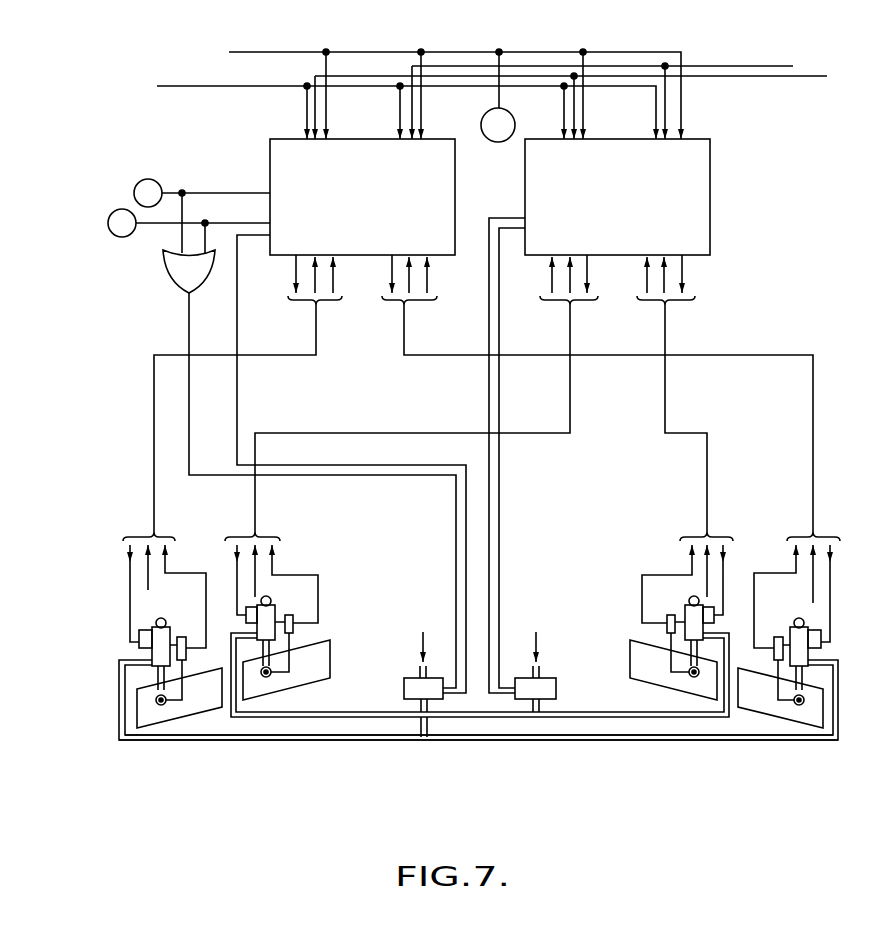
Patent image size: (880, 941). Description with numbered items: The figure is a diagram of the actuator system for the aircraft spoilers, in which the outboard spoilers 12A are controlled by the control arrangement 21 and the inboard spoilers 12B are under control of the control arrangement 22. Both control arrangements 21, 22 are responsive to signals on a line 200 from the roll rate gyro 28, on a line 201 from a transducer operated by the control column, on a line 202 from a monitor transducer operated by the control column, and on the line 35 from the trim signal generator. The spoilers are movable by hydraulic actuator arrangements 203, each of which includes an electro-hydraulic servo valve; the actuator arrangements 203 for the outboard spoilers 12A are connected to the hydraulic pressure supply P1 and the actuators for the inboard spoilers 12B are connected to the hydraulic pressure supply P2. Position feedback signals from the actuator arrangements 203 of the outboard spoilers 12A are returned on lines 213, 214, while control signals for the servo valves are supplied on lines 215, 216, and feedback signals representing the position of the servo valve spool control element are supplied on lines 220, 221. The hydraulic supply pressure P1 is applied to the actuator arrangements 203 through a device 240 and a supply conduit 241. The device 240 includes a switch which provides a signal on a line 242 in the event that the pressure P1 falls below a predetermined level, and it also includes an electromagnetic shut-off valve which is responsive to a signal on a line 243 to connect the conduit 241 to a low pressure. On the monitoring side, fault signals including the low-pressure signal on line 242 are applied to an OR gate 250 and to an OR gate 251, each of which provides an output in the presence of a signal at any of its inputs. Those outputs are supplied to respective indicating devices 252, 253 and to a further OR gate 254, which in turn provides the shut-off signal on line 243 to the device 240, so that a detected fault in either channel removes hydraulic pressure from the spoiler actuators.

The line 35 is at (193, 86).
The line 200 is at (455, 52).
The line 201 is at (553, 66).
The line 202 is at (722, 76).
The control arrangement 21 is at (283, 170).
The control arrangement 22 is at (698, 192).
The roll rate gyro 28 is at (496, 142).
The OR gate 250 is at (177, 190).
The OR gate 251 is at (221, 210).
The indicating device 252 is at (143, 180).
The indicating device 253 is at (122, 237).
The OR gate 254 is at (180, 272).
The line 213 is at (188, 573).
The line 214 is at (773, 575).
The line 215 is at (130, 585).
The line 216 is at (831, 578).
The line 220 is at (148, 590).
The line 221 is at (813, 603).
The device 240 is at (416, 688).
The supply conduit 241 is at (412, 741).
The line 242 is at (466, 556).
The line 243 is at (456, 513).
The hydraulic actuator arrangement 203 is at (121, 650).
The outboard spoiler 12A is at (173, 708).
The inboard spoiler 12B is at (300, 675).
The hydraulic pressure supply P1 is at (426, 633).
The hydraulic pressure supply P2 is at (544, 633).